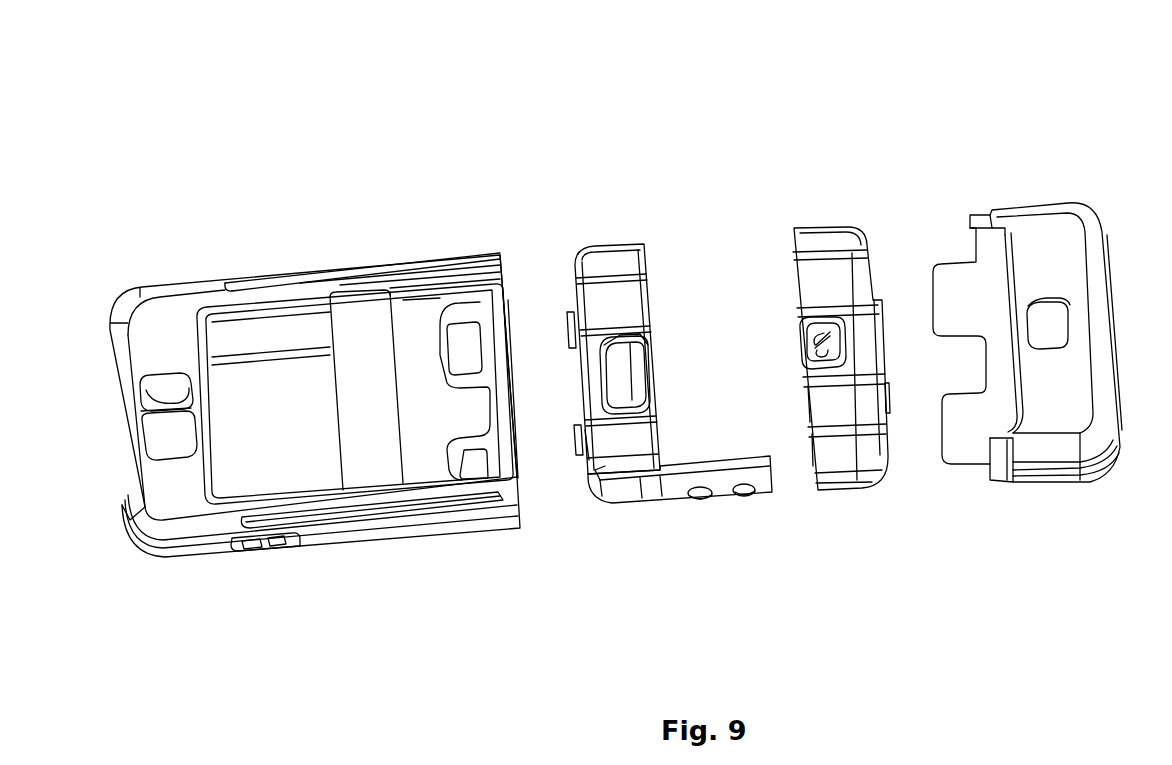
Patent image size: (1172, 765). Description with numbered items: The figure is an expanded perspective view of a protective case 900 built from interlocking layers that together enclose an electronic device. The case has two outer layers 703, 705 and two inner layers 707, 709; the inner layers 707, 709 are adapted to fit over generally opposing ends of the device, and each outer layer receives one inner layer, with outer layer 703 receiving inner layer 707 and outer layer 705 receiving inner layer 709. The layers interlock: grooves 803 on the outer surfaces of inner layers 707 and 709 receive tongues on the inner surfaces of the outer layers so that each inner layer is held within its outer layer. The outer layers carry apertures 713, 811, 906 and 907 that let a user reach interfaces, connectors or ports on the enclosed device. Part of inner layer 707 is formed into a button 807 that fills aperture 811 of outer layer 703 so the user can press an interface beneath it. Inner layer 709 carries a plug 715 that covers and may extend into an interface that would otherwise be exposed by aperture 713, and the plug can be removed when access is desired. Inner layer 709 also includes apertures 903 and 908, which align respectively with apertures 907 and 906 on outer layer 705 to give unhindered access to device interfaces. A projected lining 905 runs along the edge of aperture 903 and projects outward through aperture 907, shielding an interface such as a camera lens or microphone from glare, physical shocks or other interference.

The protective case 900 is at (417, 97).
The outer layer 705 is at (498, 250).
The aperture 907 is at (157, 376).
The aperture 713 is at (118, 498).
The aperture 906 is at (210, 548).
The plug 715 is at (580, 414).
The projected lining 905 is at (645, 322).
The aperture 903 is at (650, 355).
The inner layer 709 is at (613, 505).
The aperture 908 is at (666, 498).
The grooves 803 is at (595, 440).
The inner layer 707 is at (823, 222).
The button 807 is at (848, 318).
The outer layer 703 is at (1094, 203).
The aperture 811 is at (1045, 352).